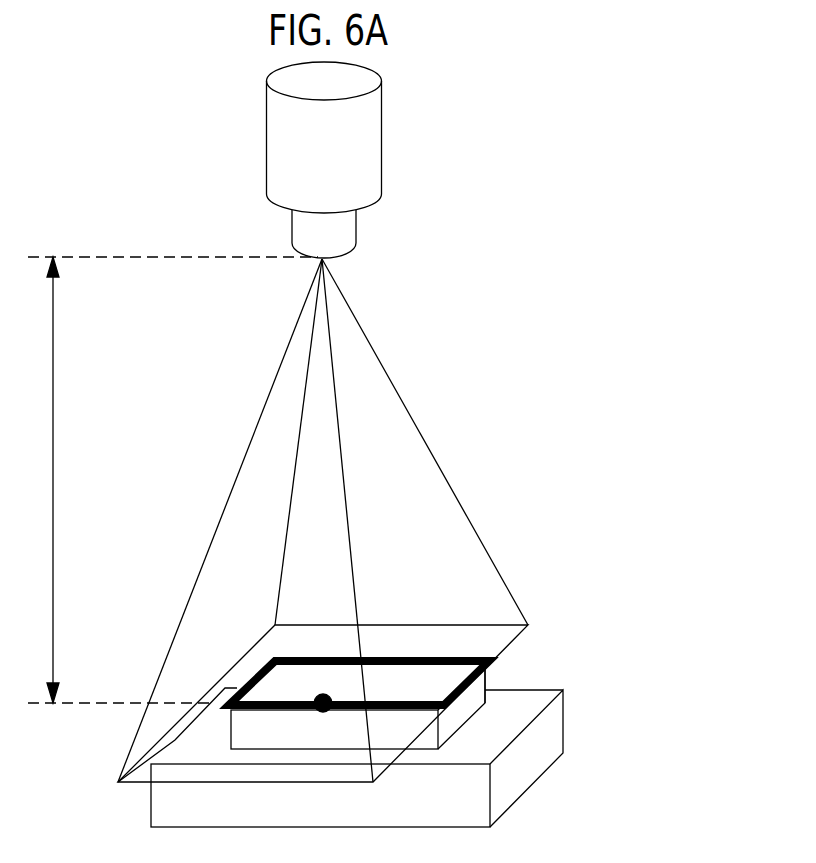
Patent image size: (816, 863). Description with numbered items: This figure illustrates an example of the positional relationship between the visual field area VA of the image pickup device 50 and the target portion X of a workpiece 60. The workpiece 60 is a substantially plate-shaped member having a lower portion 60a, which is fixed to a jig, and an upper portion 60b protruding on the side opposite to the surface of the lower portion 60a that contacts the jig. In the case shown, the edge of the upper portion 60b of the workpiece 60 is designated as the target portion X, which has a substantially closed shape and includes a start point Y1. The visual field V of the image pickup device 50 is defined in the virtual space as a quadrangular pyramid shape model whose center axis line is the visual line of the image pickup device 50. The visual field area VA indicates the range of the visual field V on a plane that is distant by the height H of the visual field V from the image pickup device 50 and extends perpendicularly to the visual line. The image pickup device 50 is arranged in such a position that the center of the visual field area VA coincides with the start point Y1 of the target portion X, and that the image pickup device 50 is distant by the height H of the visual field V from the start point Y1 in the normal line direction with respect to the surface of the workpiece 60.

The image pickup device 50 is at (382, 180).
The workpiece 60 is at (408, 716).
The lower portion 60a is at (560, 735).
The upper portion 60b is at (422, 691).
The target portion X is at (473, 657).
The visual field V is at (432, 488).
The visual field area VA is at (470, 623).
The start point Y1 is at (322, 694).
The height of the visual field H is at (167, 480).